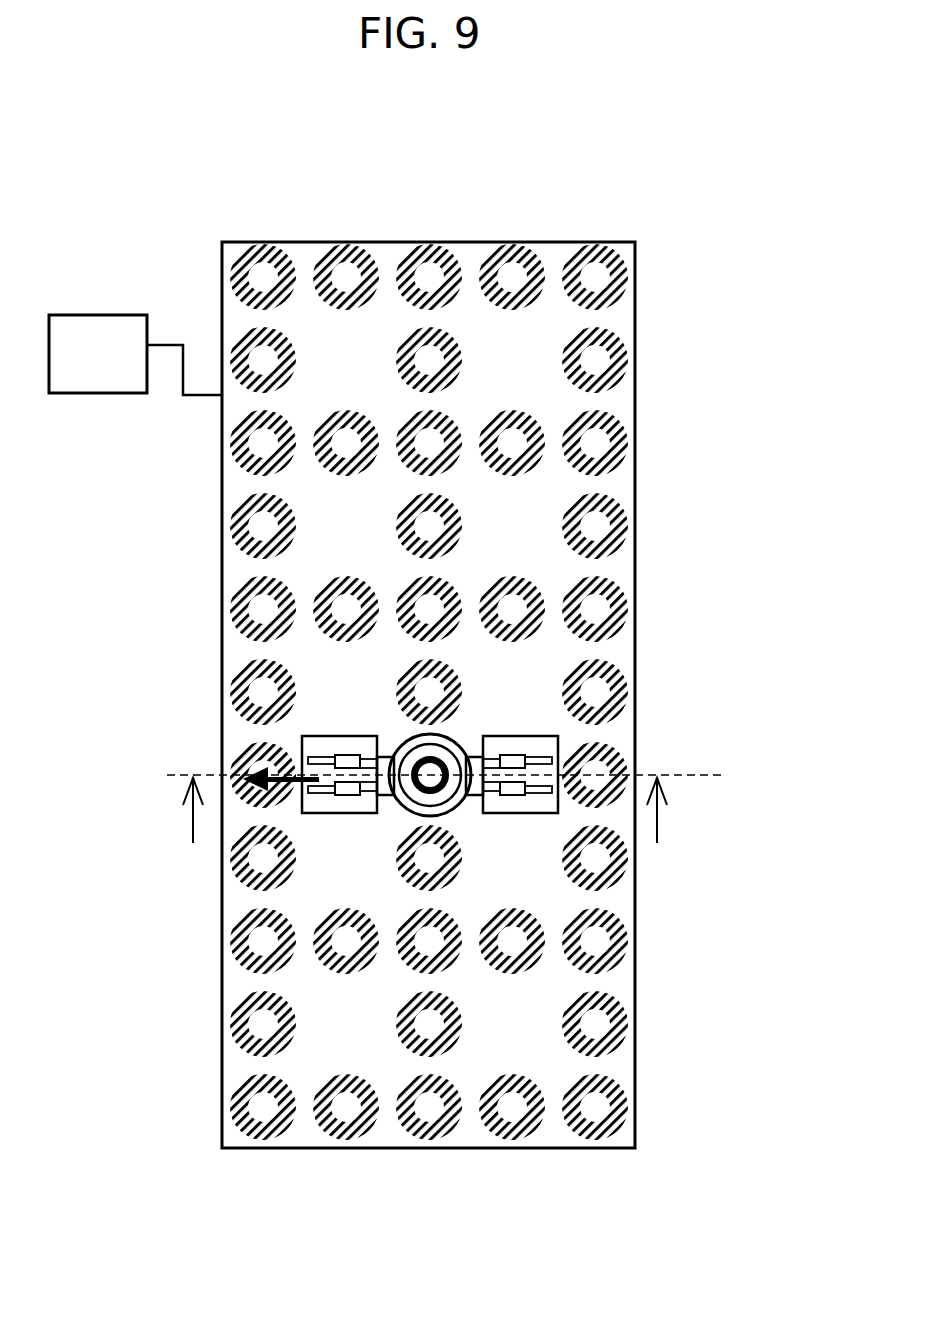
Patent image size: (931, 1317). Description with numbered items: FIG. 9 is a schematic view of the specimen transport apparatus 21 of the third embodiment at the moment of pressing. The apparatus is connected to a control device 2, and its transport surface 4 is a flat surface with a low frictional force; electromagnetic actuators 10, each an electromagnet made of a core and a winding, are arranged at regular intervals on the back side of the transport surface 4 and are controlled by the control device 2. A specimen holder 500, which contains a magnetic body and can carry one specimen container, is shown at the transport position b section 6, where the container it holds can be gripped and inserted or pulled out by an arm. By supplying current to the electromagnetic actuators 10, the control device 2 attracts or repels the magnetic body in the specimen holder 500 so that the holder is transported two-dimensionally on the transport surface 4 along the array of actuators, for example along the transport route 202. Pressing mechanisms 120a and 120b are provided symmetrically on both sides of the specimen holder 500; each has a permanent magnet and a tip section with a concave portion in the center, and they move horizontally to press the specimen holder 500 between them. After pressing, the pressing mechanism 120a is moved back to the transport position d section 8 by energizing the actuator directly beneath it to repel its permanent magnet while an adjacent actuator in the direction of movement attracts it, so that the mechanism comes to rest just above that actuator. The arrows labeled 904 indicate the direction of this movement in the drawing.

The specimen transport apparatus 21 is at (305, 242).
The transport surface 4 is at (510, 392).
The electromagnetic actuator 10 is at (242, 540).
The transport position d section 8 is at (240, 760).
The control device 2 is at (123, 313).
The pressing mechanism 120a is at (318, 740).
The pressing mechanism 120b is at (558, 745).
The transport position b section 6 is at (447, 800).
The specimen holder 500 is at (400, 805).
The transport route 202 is at (290, 777).
The scanning direction arrow 904 is at (399, 814).